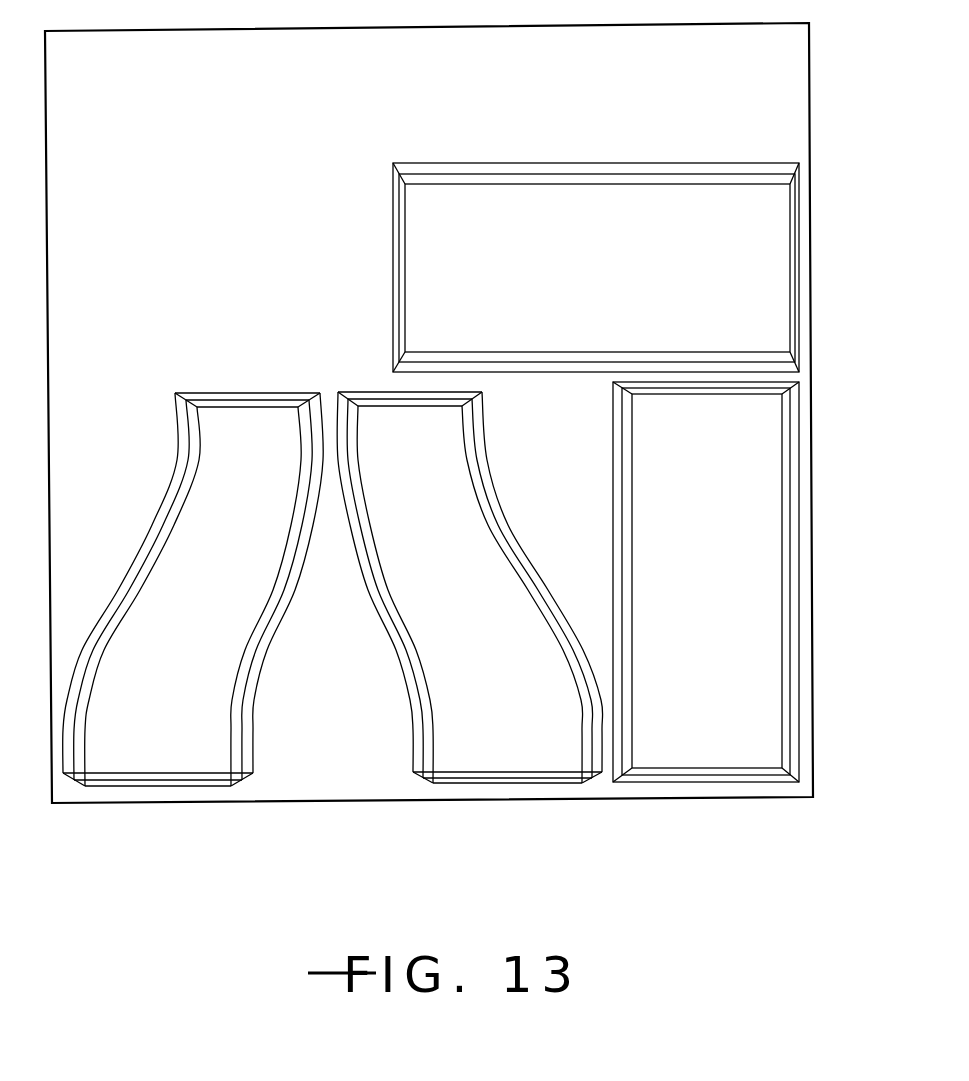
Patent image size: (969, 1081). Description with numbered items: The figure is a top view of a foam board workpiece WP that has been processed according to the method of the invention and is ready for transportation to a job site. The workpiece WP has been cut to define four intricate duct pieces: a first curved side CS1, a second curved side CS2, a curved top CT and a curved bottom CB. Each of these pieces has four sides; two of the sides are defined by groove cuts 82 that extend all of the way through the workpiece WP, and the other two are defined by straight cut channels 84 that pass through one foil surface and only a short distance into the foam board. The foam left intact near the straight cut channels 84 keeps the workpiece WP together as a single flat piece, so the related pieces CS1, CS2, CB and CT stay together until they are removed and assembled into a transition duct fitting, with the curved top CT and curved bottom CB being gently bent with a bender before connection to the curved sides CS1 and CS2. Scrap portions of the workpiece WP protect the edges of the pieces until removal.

The groove cuts 82 is at (463, 474).
The straight cut channels 84 is at (463, 521).
The workpiece WP is at (624, 797).
The curved top CT is at (596, 267).
The curved bottom CB is at (706, 582).
The first curved side CS1 is at (193, 589).
The second curved side CS2 is at (470, 587).